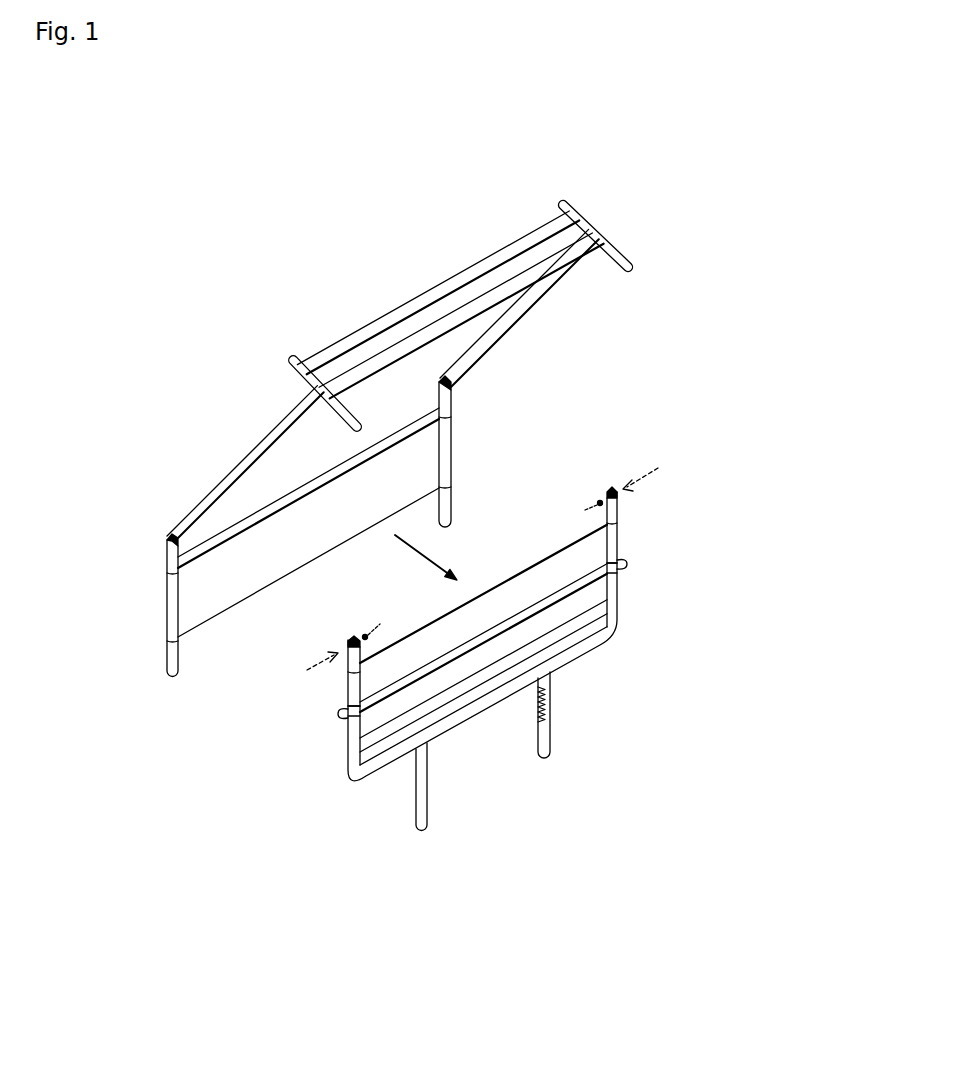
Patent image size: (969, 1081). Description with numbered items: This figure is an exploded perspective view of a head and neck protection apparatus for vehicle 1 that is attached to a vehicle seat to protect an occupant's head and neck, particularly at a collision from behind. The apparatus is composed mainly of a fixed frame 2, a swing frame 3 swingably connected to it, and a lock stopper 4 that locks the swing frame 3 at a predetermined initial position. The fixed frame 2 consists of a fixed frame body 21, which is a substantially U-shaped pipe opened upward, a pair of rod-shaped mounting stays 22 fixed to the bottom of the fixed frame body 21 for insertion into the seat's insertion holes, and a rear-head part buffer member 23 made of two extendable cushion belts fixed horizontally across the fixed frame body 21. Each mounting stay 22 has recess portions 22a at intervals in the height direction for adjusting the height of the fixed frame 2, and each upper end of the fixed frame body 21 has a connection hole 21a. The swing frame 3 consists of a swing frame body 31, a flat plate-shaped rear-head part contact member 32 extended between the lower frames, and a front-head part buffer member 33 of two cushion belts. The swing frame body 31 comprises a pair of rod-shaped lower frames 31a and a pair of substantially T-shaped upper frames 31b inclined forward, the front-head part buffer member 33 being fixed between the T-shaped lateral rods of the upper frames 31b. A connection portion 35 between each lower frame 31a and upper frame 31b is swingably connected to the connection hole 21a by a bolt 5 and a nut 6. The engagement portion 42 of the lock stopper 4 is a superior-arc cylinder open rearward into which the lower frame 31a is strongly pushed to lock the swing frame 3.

The head and neck protection apparatus for vehicle 1 is at (807, 247).
The fixed frame 2 is at (713, 490).
The swing frame 3 is at (152, 370).
The lock stopper 4 is at (488, 674).
The bolt 5 is at (637, 477).
The nut 6 is at (600, 500).
The fixed frame body 21 is at (357, 780).
The connection hole 21a is at (352, 637).
The mounting stay 22 is at (420, 833).
The recess portion 22a is at (555, 690).
The rear-head part buffer member 23 is at (530, 567).
The swing frame body 31 is at (250, 452).
The lower frame 31a is at (168, 682).
The upper frame 31b is at (563, 205).
The rear-head part contact member 32 is at (350, 524).
The front-head part buffer member 33 is at (480, 297).
The connection portion 35 is at (166, 541).
The engagement portion 42 is at (618, 567).